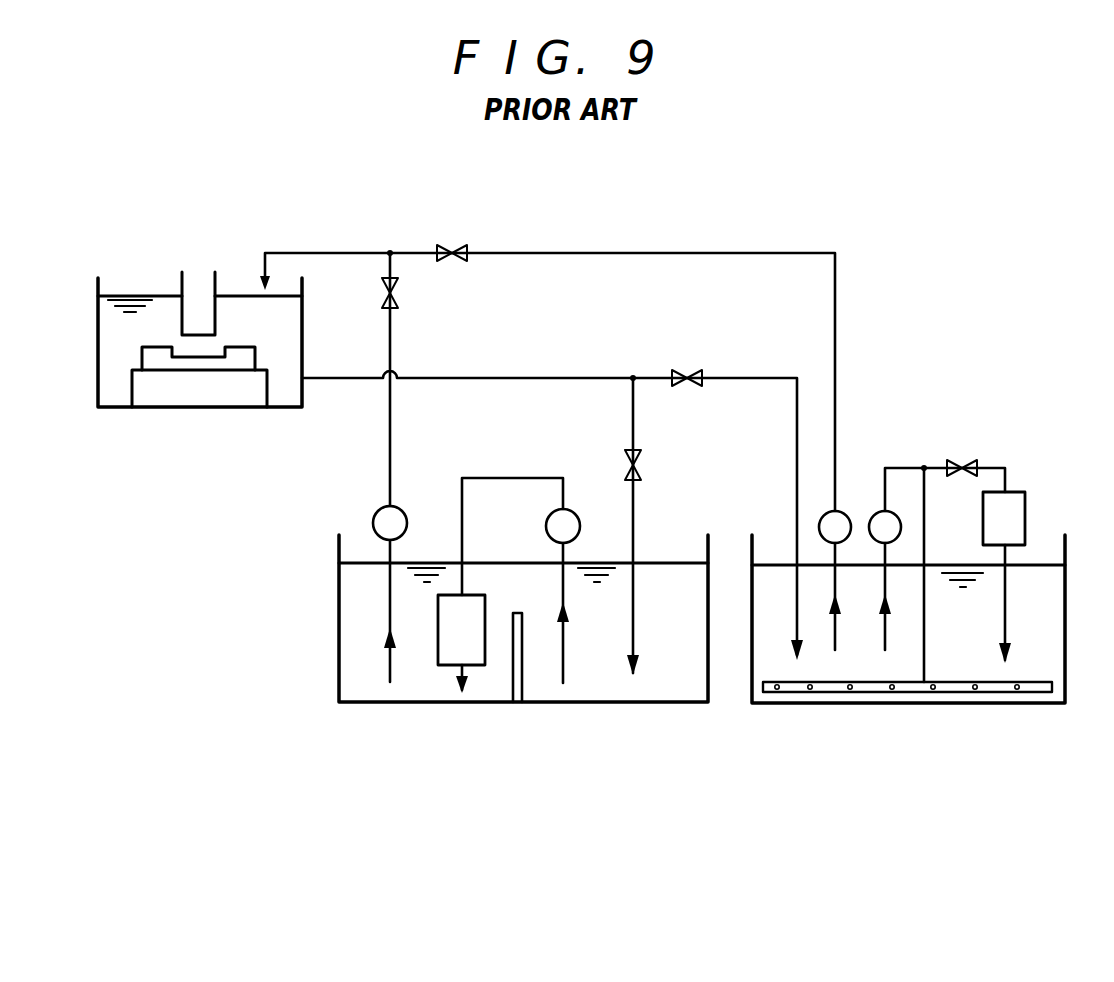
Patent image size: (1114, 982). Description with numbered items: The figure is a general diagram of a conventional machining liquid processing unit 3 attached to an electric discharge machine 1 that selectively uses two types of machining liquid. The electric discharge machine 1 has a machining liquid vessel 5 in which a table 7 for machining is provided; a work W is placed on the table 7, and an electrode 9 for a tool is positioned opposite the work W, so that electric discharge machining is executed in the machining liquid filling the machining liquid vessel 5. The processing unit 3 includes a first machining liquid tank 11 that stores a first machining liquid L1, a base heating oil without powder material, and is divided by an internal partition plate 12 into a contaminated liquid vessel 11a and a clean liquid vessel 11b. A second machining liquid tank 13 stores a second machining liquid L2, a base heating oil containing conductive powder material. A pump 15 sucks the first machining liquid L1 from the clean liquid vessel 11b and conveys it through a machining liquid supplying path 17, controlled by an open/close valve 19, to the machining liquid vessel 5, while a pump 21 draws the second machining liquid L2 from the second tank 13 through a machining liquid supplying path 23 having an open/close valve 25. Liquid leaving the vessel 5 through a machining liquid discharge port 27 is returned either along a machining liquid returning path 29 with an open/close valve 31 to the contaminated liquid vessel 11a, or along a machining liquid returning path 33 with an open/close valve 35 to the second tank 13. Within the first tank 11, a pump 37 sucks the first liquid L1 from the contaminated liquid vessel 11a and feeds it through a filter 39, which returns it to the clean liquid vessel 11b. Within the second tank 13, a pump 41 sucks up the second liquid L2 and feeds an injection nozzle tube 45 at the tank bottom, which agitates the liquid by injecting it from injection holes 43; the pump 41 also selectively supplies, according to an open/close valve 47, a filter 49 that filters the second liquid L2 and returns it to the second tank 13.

The electric discharge machine 1 is at (108, 258).
The machining liquid processing unit 3 is at (350, 464).
The machining liquid vessel 5 is at (304, 322).
The table for machining 7 is at (174, 398).
The work W is at (241, 362).
The electrode for a tool 9 is at (183, 282).
The first machining liquid tank 11 is at (660, 704).
The contaminated liquid vessel 11a is at (610, 686).
The clean liquid vessel 11b is at (423, 684).
The partition plate 12 is at (524, 662).
The second machining liquid tank 13 is at (782, 705).
The pump 15 is at (405, 516).
The machining liquid supplying path 17 is at (392, 436).
The open/close valve 19 is at (398, 302).
The pump 21 is at (850, 508).
The machining liquid supplying path 23 is at (643, 253).
The open/close valve 25 is at (462, 246).
The machining liquid discharge port 27 is at (304, 381).
The machining liquid returning path 29 is at (637, 423).
The open/close valve 31 is at (640, 469).
The machining liquid returning path 33 is at (745, 377).
The open/close valve 35 is at (692, 370).
The pump 37 is at (574, 508).
The filter 39 is at (470, 594).
The pump 41 is at (895, 508).
The injection holes 43 is at (812, 692).
The injection nozzle tube 45 is at (950, 694).
The open/close valve 47 is at (968, 459).
The filter 49 is at (1026, 516).
The first machining liquid L1 is at (667, 622).
The second machining liquid L2 is at (960, 620).